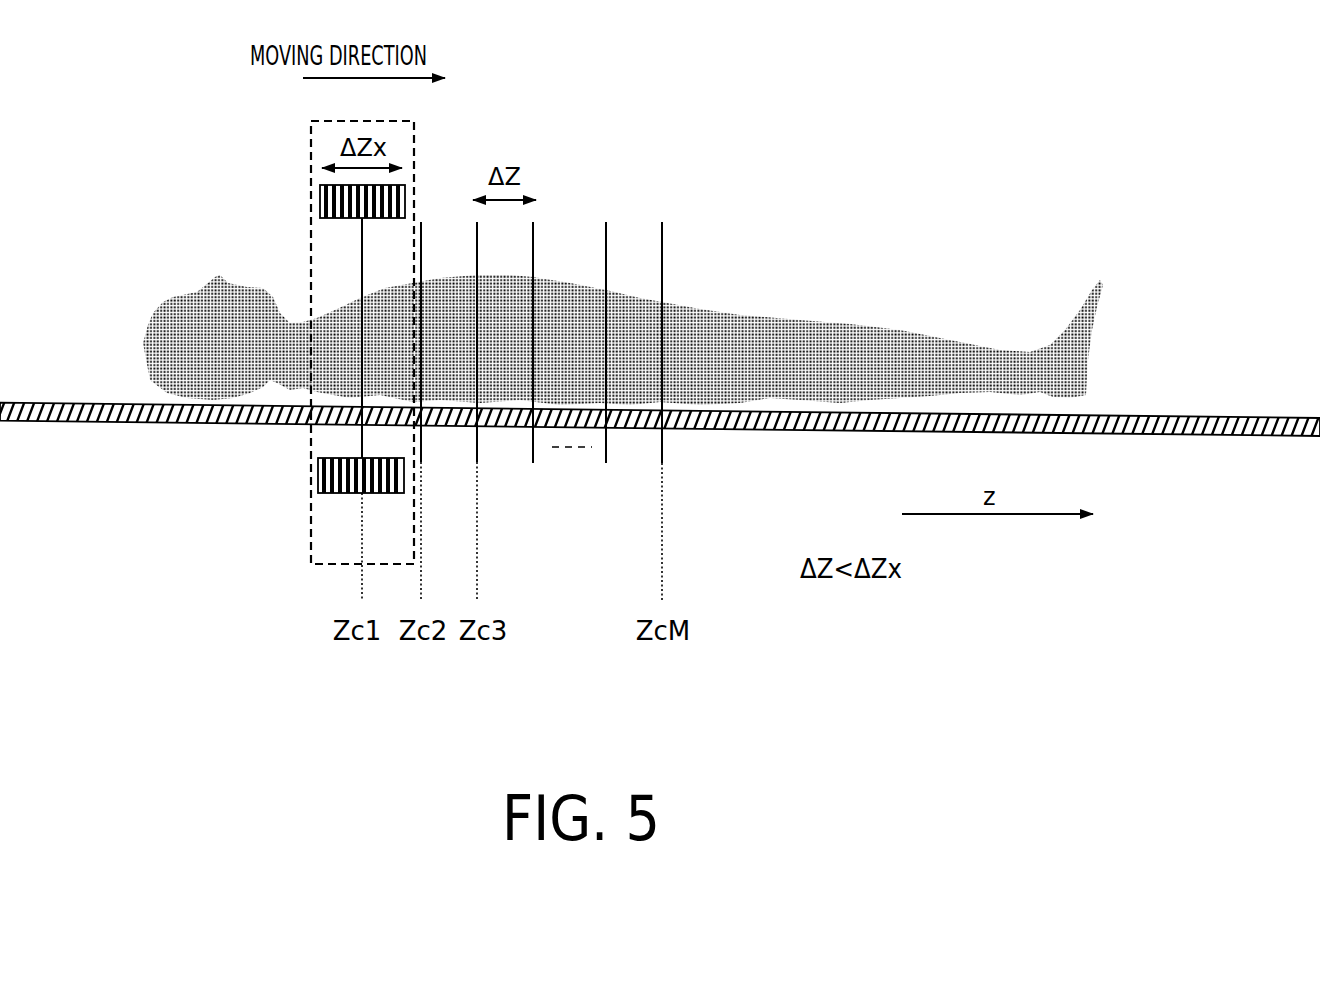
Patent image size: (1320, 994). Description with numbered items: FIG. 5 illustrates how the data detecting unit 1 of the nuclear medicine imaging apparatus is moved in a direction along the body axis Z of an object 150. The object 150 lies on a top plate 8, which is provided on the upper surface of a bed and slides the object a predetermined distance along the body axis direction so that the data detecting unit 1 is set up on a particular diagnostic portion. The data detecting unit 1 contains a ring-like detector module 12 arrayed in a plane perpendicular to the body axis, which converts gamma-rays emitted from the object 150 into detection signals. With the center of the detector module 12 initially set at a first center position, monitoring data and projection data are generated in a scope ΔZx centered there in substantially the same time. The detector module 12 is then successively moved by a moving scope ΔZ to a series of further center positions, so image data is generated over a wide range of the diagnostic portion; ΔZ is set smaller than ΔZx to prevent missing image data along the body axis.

The data detecting unit 1 is at (312, 140).
The detector module 12 is at (320, 197).
The object 150 is at (737, 316).
The top plate 8 is at (1162, 431).